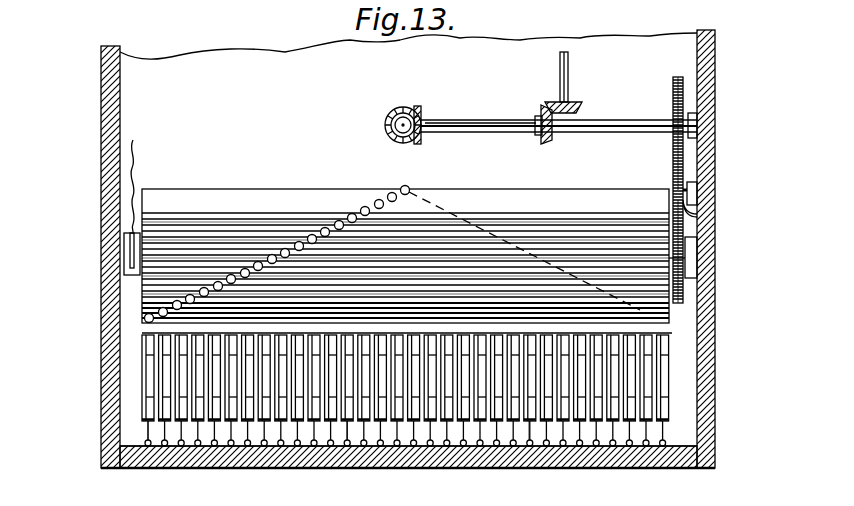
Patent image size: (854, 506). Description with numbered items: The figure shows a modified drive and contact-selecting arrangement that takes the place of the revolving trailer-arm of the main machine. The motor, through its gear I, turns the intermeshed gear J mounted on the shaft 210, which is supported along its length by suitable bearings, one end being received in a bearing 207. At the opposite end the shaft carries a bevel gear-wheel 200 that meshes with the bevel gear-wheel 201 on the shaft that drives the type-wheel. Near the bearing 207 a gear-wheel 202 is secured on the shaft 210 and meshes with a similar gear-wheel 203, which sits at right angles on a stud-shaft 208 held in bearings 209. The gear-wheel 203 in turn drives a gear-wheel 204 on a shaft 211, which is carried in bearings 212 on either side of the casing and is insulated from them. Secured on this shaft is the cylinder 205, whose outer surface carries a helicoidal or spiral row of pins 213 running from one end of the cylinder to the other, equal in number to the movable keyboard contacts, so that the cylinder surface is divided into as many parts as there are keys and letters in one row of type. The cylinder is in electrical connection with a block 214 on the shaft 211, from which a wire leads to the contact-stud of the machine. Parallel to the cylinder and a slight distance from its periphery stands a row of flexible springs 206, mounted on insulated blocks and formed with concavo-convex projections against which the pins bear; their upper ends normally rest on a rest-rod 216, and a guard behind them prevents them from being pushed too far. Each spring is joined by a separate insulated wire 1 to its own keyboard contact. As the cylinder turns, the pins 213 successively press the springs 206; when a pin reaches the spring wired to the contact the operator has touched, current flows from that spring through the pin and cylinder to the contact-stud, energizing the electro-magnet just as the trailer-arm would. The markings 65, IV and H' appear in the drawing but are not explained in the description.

The bevel gear-wheel 200 is at (421, 112).
The bevel gear-wheel 201 is at (403, 106).
The gear-wheel 202 is at (654, 189).
The gear-wheel 203 is at (676, 190).
The gear-wheel 204 is at (683, 292).
The cylinder 205 is at (142, 295).
The flexible springs 206 is at (183, 450).
The bearing 207 is at (697, 125).
The stud-shaft 208 is at (698, 216).
The bearings 209 is at (698, 195).
The shaft 210 is at (480, 141).
The shaft 211 is at (698, 262).
The bearings 212 is at (698, 245).
The pins 213 is at (289, 248).
The block 214 is at (131, 233).
The rest-rod 216 is at (160, 365).
The vertical shaft 65 is at (560, 66).
The gear I is at (568, 103).
The gear J is at (544, 137).
The lead wire IV is at (137, 163).
The insulated wires 1 is at (147, 436).
The key support H' is at (369, 487).